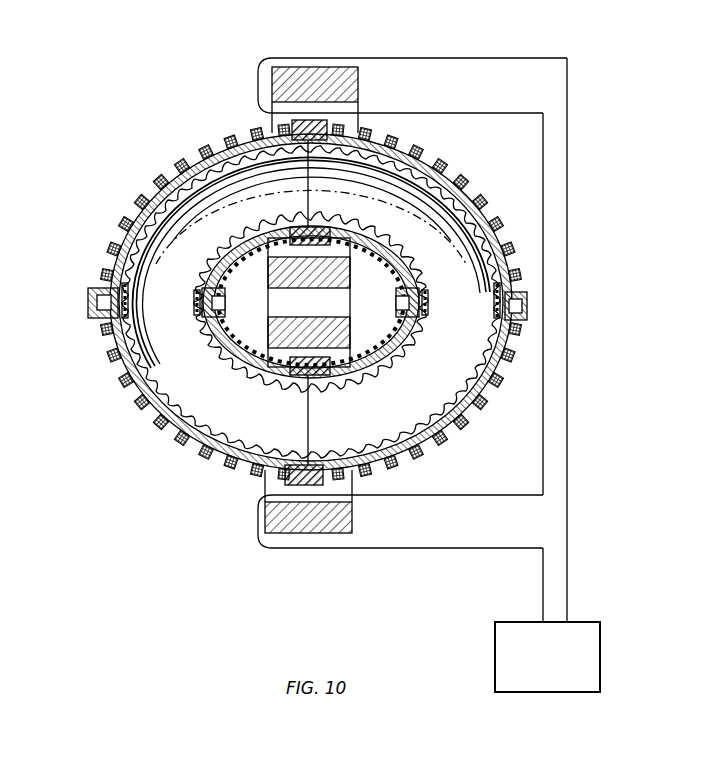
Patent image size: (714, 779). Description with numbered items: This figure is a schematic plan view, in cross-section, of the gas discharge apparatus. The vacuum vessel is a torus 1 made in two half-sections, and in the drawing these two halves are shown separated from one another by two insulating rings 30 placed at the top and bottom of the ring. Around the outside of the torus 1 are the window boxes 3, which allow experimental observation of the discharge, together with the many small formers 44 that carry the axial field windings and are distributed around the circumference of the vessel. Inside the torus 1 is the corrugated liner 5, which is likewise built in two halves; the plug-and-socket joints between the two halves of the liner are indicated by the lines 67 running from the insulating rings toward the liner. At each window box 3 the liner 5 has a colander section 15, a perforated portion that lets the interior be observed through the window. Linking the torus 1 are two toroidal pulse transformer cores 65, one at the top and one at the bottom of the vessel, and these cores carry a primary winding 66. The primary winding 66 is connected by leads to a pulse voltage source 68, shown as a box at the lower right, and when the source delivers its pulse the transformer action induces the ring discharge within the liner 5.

The torus 1 is at (455, 168).
The window box 3 is at (88, 303).
The corrugated liner 5 is at (407, 247).
The colander section 15 is at (127, 291).
The insulating ring 30 is at (303, 226).
The former 44 is at (174, 162).
The toroidal pulse transformer core 65 is at (358, 97).
The primary winding 66 is at (300, 58).
The plug-and-socket joint line 67 is at (314, 193).
The pulse voltage source 68 is at (562, 666).